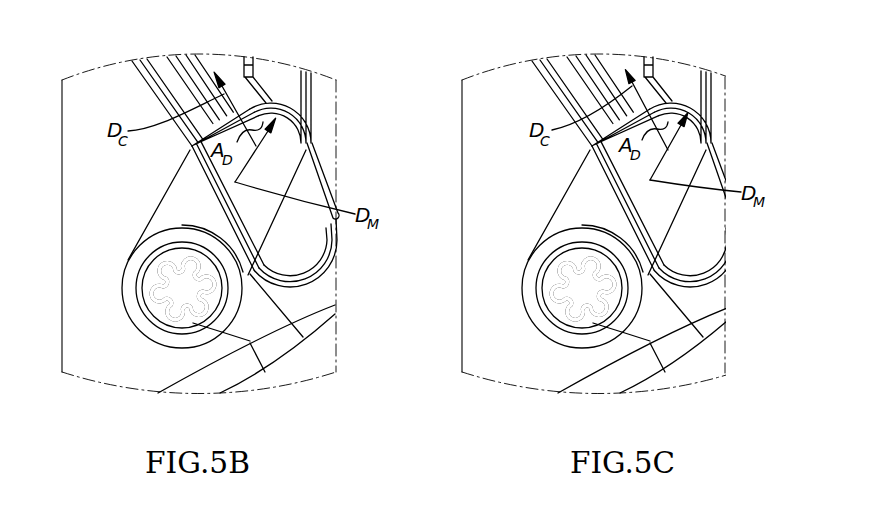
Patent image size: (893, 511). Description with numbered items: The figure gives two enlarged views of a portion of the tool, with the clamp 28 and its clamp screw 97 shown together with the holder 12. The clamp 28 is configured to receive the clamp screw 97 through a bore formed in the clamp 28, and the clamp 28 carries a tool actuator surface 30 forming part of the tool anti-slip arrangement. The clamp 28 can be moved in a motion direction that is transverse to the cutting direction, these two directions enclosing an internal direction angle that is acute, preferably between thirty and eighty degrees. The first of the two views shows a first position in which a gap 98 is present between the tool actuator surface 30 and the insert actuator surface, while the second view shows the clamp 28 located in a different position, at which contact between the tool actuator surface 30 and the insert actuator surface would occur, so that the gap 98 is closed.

In FIG. 5B, the tool holder body 12 is at (326, 110).
In FIG. 5C, the tool holder body 12 is at (722, 92).
In FIG. 5B, the clamp 28 is at (255, 223).
In FIG. 5C, the clamp 28 is at (655, 221).
In FIG. 5B, the tool actuator surface 30 is at (190, 151).
In FIG. 5C, the tool actuator surface 30 is at (594, 153).
In FIG. 5B, the clamp screw 97 is at (335, 305).
In FIG. 5C, the clamp screw 97 is at (726, 304).
In FIG. 5B, the gap 98 is at (274, 104).